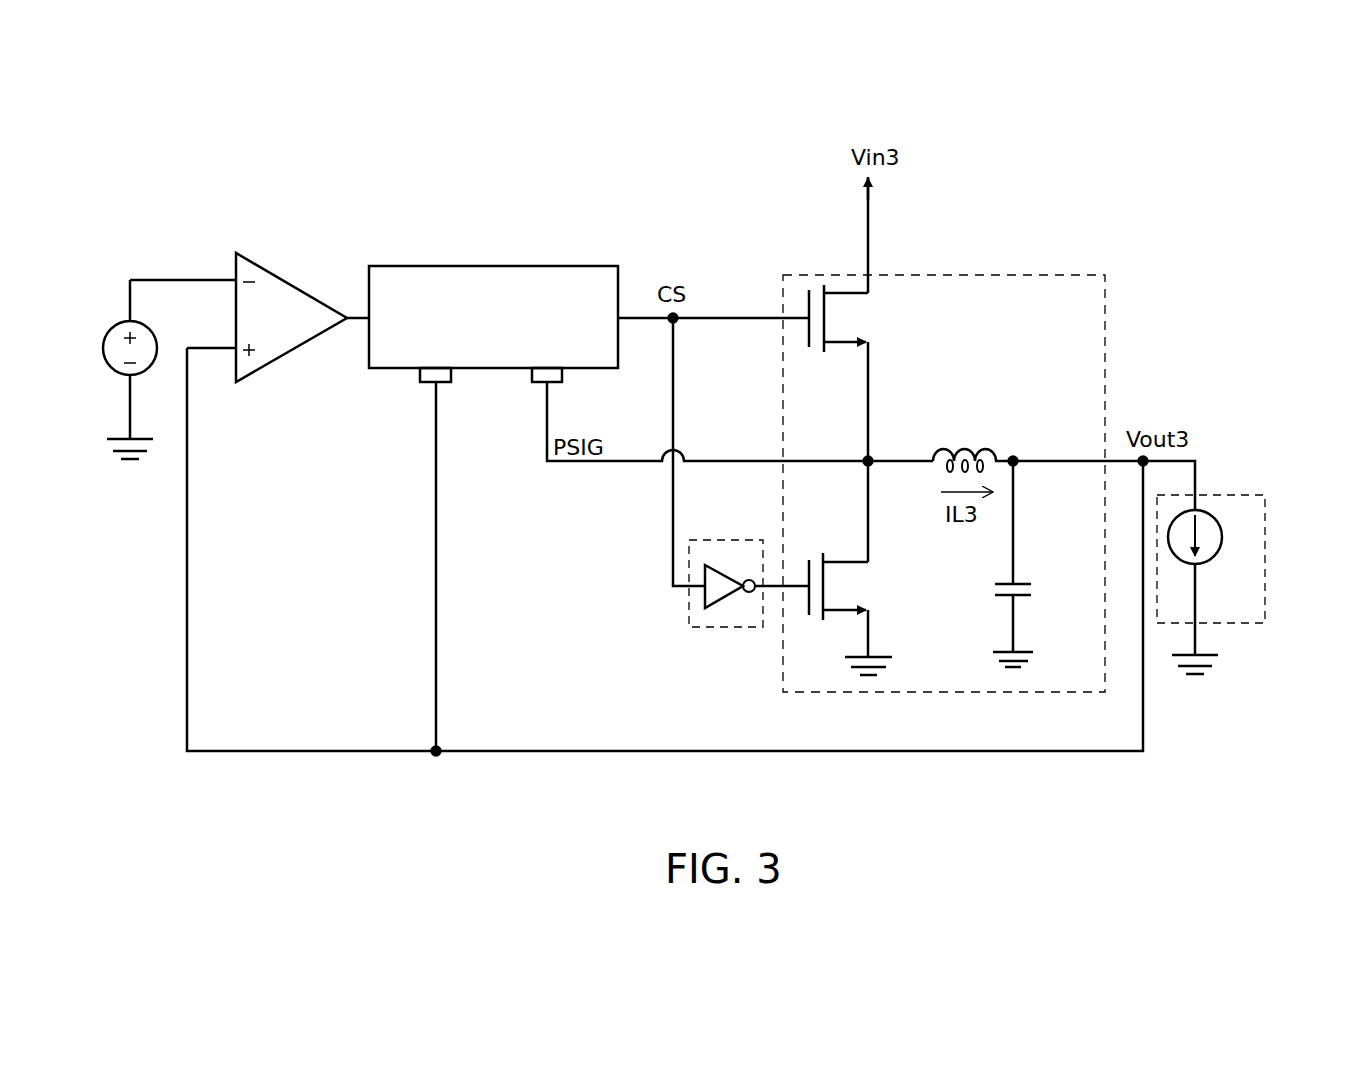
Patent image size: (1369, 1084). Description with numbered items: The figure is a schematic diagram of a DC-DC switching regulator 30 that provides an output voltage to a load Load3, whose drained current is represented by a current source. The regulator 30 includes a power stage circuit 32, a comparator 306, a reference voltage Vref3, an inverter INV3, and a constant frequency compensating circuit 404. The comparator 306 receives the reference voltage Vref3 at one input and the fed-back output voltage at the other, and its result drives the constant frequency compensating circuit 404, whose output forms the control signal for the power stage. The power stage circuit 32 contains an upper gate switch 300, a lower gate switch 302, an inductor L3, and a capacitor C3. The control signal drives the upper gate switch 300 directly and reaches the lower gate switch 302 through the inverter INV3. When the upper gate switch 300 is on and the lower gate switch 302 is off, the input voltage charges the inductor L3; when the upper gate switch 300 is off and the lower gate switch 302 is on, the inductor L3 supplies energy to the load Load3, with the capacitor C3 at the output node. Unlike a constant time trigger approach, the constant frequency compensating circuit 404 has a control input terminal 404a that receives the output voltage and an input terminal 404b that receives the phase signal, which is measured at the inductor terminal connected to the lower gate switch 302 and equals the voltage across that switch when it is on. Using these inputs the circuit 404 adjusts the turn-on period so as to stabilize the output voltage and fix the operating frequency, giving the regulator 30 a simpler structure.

The DC-DC switching regulator 30 is at (1228, 188).
The power stage circuit 32 is at (1107, 312).
The upper gate switch 300 is at (874, 317).
The lower gate switch 302 is at (873, 578).
The comparator 306 is at (293, 284).
The constant frequency compensating circuit 404 is at (558, 266).
The control input terminal 404a is at (421, 382).
The input terminal 404b is at (553, 378).
The reference voltage Vref3 is at (102, 369).
The inverter INV3 is at (711, 628).
The inductor L3 is at (964, 446).
The capacitor C3 is at (1037, 590).
The load Load3 is at (1210, 497).